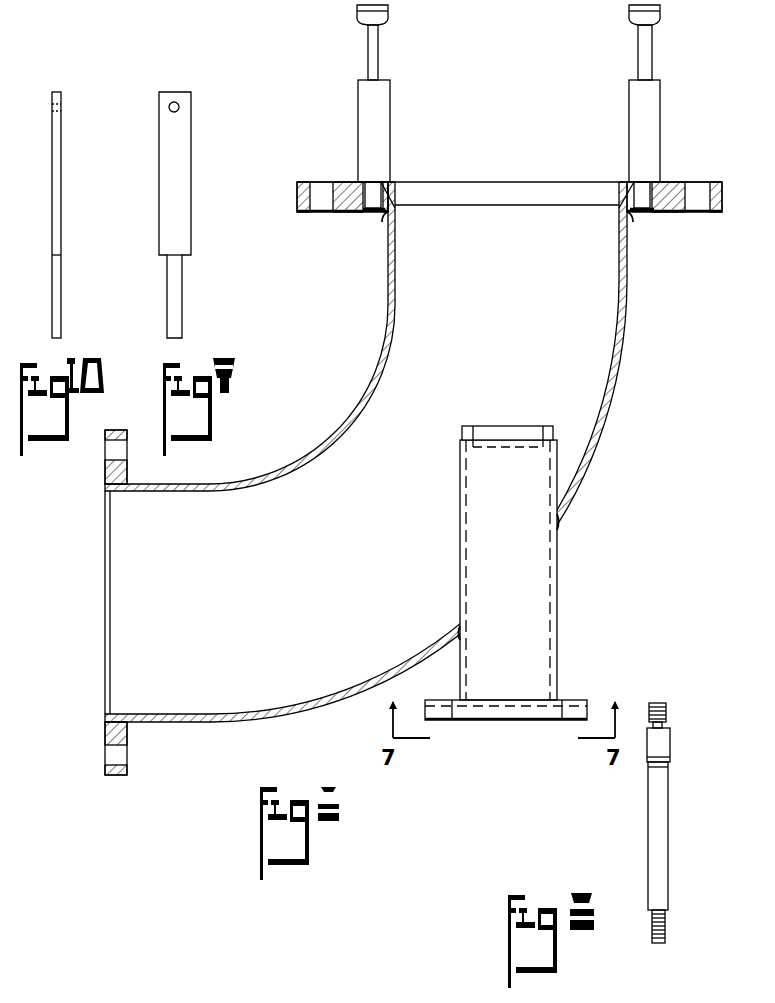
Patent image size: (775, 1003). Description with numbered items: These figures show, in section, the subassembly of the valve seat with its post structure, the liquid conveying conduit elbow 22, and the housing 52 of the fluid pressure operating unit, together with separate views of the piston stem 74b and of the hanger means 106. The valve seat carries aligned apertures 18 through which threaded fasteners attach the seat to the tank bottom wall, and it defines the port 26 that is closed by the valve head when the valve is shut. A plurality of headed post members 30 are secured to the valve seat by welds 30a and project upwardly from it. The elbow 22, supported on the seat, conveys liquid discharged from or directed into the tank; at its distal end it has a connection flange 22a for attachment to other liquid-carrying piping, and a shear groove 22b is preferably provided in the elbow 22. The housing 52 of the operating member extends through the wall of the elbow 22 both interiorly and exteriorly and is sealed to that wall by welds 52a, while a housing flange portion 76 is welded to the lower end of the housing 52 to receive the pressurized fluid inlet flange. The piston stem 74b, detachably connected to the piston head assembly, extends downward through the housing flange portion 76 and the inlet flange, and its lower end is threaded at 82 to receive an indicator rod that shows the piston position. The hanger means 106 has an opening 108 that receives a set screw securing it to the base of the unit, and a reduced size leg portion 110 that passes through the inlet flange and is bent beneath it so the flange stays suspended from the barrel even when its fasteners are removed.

In FIG. 6, the aligned apertures 18 is at (328, 213).
In FIG. 6, the conduit elbow 22 is at (618, 377).
In FIG. 6, the connection flange 22a is at (125, 430).
In FIG. 6, the shear groove 22b is at (388, 222).
In FIG. 6, the port 26 is at (394, 183).
In FIG. 6, the headed post members 30 is at (383, 120).
In FIG. 6, the welds 30a is at (371, 212).
In FIG. 6, the housing 52 is at (557, 571).
In FIG. 6, the welds 52a is at (562, 526).
In FIG. 6, the housing flange portion 76 is at (575, 700).
In FIG. 8, the piston stem 74b is at (670, 822).
In FIG. 8, the threaded lower end 82 is at (665, 935).
In FIG. 9, the hanger means 106 is at (184, 178).
In FIG. 10, the hanger means 106 is at (63, 178).
In FIG. 9, the opening 108 is at (177, 102).
In FIG. 10, the opening 108 is at (70, 92).
In FIG. 9, the reduced size leg portion 110 is at (172, 296).
In FIG. 10, the reduced size leg portion 110 is at (62, 290).